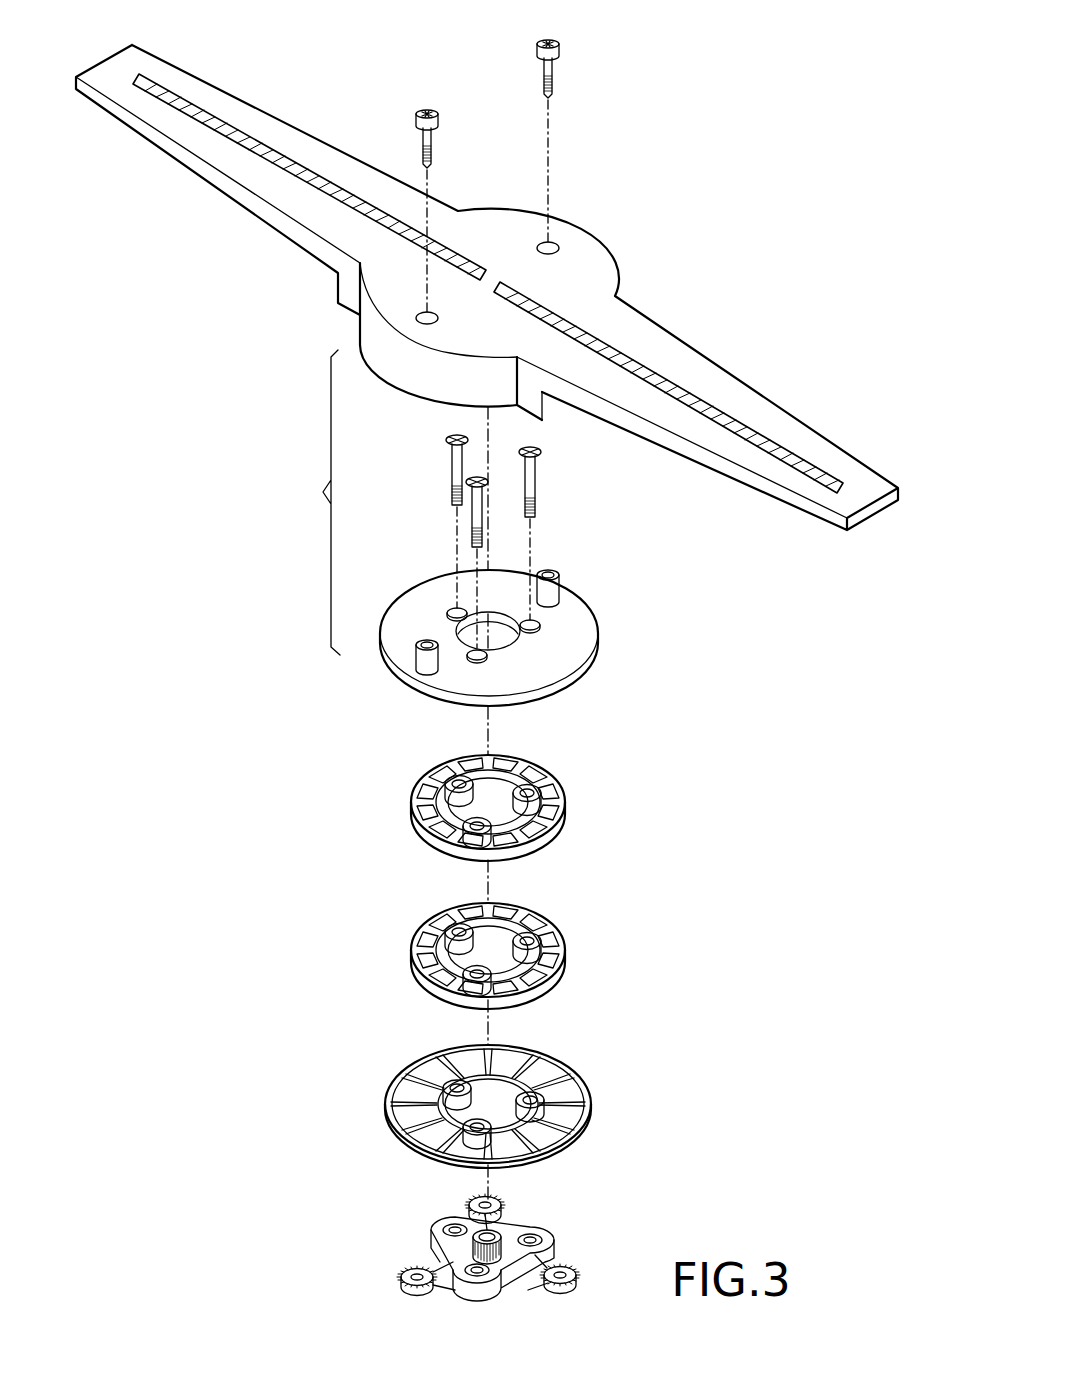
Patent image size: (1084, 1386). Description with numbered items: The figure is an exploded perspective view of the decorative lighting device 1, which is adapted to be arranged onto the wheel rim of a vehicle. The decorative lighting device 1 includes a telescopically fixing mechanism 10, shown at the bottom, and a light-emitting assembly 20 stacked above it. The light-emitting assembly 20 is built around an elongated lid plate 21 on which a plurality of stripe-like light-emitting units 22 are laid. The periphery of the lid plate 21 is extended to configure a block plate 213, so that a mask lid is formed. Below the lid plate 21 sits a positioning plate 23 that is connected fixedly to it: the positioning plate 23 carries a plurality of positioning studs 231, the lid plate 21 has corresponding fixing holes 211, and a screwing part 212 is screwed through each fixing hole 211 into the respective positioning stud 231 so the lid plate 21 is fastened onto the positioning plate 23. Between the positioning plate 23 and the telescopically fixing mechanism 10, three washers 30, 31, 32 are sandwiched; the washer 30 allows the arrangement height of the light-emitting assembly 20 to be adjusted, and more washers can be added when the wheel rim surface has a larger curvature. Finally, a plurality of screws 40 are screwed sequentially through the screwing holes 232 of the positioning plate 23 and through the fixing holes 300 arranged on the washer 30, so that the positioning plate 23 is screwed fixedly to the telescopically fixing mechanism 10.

The decorative lighting device 1 is at (785, 138).
The telescopically fixing mechanism 10 is at (592, 1245).
The light-emitting assembly 20 is at (310, 502).
The lid plate 21 is at (487, 285).
The fixing hole 211 is at (557, 243).
The screwing part 212 is at (547, 70).
The block plate 213 is at (405, 377).
The light-emitting unit 22 is at (717, 420).
The positioning plate 23 is at (537, 616).
The positioning stud 231 is at (548, 570).
The screwing hole 232 is at (540, 620).
The washer 30 is at (565, 802).
The fixing hole 300 is at (553, 951).
The washer 31 is at (565, 933).
The washer 32 is at (583, 1088).
The screw 40 is at (532, 477).